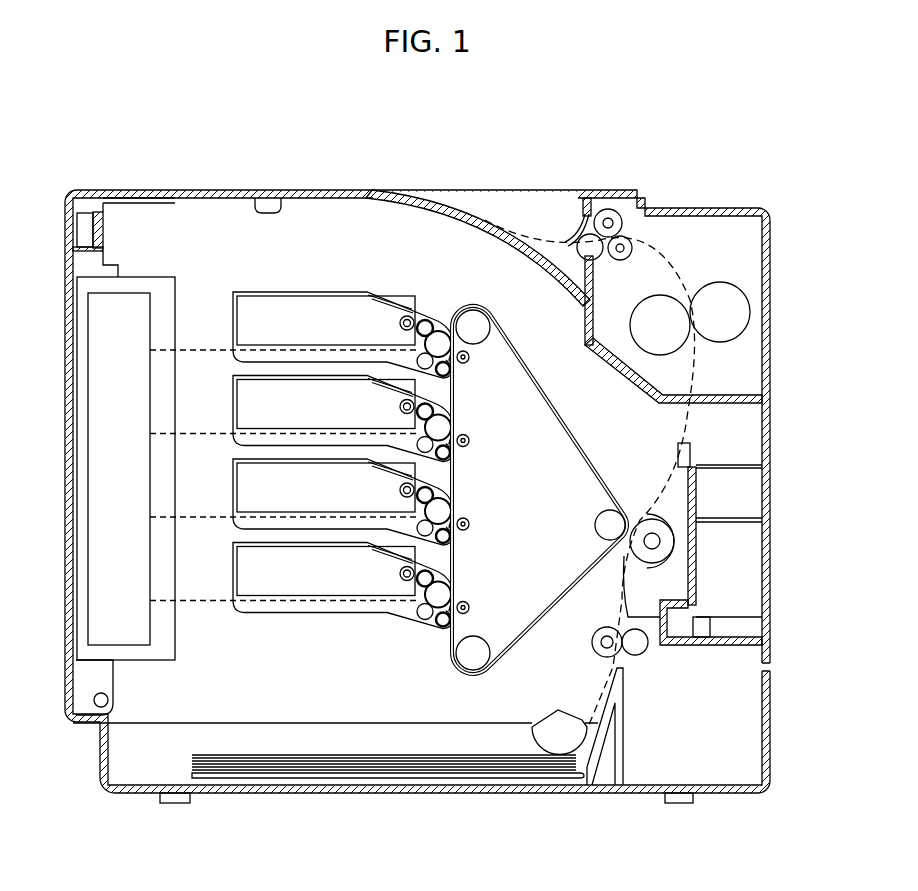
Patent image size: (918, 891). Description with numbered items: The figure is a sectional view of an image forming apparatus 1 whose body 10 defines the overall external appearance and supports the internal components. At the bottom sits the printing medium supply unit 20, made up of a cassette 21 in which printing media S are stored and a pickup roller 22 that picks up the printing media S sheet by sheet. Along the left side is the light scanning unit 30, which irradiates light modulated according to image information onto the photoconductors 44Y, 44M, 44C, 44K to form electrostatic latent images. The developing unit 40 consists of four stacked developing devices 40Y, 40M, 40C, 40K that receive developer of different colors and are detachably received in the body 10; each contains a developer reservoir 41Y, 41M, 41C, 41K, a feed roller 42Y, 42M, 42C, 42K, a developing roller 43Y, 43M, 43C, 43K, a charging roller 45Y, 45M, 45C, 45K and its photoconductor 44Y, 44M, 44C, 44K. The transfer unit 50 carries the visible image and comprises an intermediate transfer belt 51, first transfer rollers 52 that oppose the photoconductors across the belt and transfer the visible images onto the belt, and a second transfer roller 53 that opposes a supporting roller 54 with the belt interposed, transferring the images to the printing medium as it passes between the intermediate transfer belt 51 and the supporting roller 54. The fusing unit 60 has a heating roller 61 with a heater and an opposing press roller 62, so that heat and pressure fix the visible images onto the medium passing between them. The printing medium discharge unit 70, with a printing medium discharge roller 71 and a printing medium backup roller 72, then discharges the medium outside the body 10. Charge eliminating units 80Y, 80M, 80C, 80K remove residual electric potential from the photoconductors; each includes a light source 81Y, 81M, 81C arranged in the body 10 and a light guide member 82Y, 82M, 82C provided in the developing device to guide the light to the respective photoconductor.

The image forming apparatus 1 is at (141, 137).
The body 10 is at (727, 208).
The printing medium supply unit 20 is at (340, 806).
The cassette 21 is at (290, 776).
The pickup roller 22 is at (552, 718).
The light scanning unit 30 is at (93, 585).
The developing unit 40 is at (300, 278).
The developing device 40Y is at (231, 314).
The developing device 40M is at (361, 425).
The developing device 40C is at (359, 508).
The developing device 40K is at (337, 615).
The developer reservoir 41Y is at (297, 334).
The developer reservoir 41M is at (326, 404).
The developer reservoir 41C is at (326, 487).
The developer reservoir 41K is at (326, 571).
The feed roller 42Y is at (401, 323).
The feed roller 42M is at (367, 397).
The feed roller 42C is at (367, 480).
The feed roller 42K is at (367, 564).
The developing roller 43Y is at (427, 321).
The developing roller 43M is at (471, 405).
The developing roller 43C is at (470, 489).
The developing roller 43K is at (470, 571).
The photoconductor 44Y is at (441, 332).
The photoconductor 44M is at (475, 429).
The photoconductor 44C is at (474, 512).
The photoconductor 44K is at (474, 594).
The charging roller 45Y is at (421, 358).
The charging roller 45M is at (376, 428).
The charging roller 45C is at (376, 511).
The charging roller 45K is at (376, 595).
The transfer unit 50 is at (540, 636).
The intermediate transfer belt 51 is at (588, 448).
The first transfer roller 52 is at (493, 350).
The second transfer roller 53 is at (615, 512).
The supporting roller 54 is at (635, 551).
The fusing unit 60 is at (712, 352).
The heating roller 61 is at (737, 297).
The press roller 62 is at (640, 340).
The printing medium discharge unit 70 is at (629, 226).
The printing medium discharge roller 71 is at (604, 210).
The printing medium backup roller 72 is at (621, 260).
The charge eliminating unit 80Y is at (453, 370).
The charge eliminating unit 80M is at (481, 462).
The charge eliminating unit 80C is at (480, 545).
The charge eliminating unit 80K is at (480, 619).
The light source 81Y is at (469, 357).
The light source 81M is at (514, 444).
The light source 81C is at (513, 528).
The light guide member 82Y is at (456, 372).
The light guide member 82M is at (509, 461).
The light guide member 82C is at (507, 545).
The printing media S is at (262, 753).